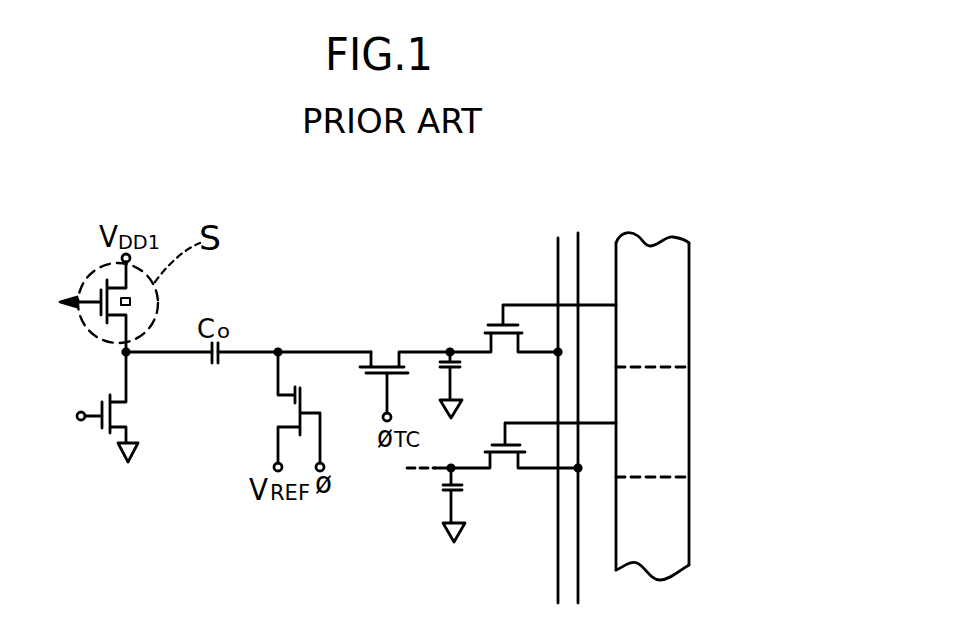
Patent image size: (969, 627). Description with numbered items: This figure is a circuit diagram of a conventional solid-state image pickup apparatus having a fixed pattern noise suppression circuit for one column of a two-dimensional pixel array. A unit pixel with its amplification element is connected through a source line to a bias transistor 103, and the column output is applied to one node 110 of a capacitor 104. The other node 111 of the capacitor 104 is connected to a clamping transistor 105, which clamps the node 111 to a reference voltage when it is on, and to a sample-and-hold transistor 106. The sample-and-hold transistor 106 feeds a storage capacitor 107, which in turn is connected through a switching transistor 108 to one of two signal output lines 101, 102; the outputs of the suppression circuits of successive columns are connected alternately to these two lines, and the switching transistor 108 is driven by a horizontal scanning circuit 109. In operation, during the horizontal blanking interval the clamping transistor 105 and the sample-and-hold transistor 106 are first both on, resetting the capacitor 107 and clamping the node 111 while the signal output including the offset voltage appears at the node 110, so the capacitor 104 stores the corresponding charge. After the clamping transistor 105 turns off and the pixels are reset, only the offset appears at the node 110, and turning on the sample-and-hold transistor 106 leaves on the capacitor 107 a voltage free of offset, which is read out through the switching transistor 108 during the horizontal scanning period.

The signal output line 101 is at (557, 277).
The signal output line 102 is at (582, 553).
The bias transistor 103 is at (98, 430).
The capacitor 104 is at (215, 366).
The clamping transistor 105 is at (312, 375).
The sample-and-hold transistor 106 is at (372, 382).
The capacitor 107 is at (463, 370).
The switching transistor 108 is at (507, 338).
The horizontal scanning circuit 109 is at (645, 257).
The node 110 is at (183, 355).
The node 111 is at (278, 350).